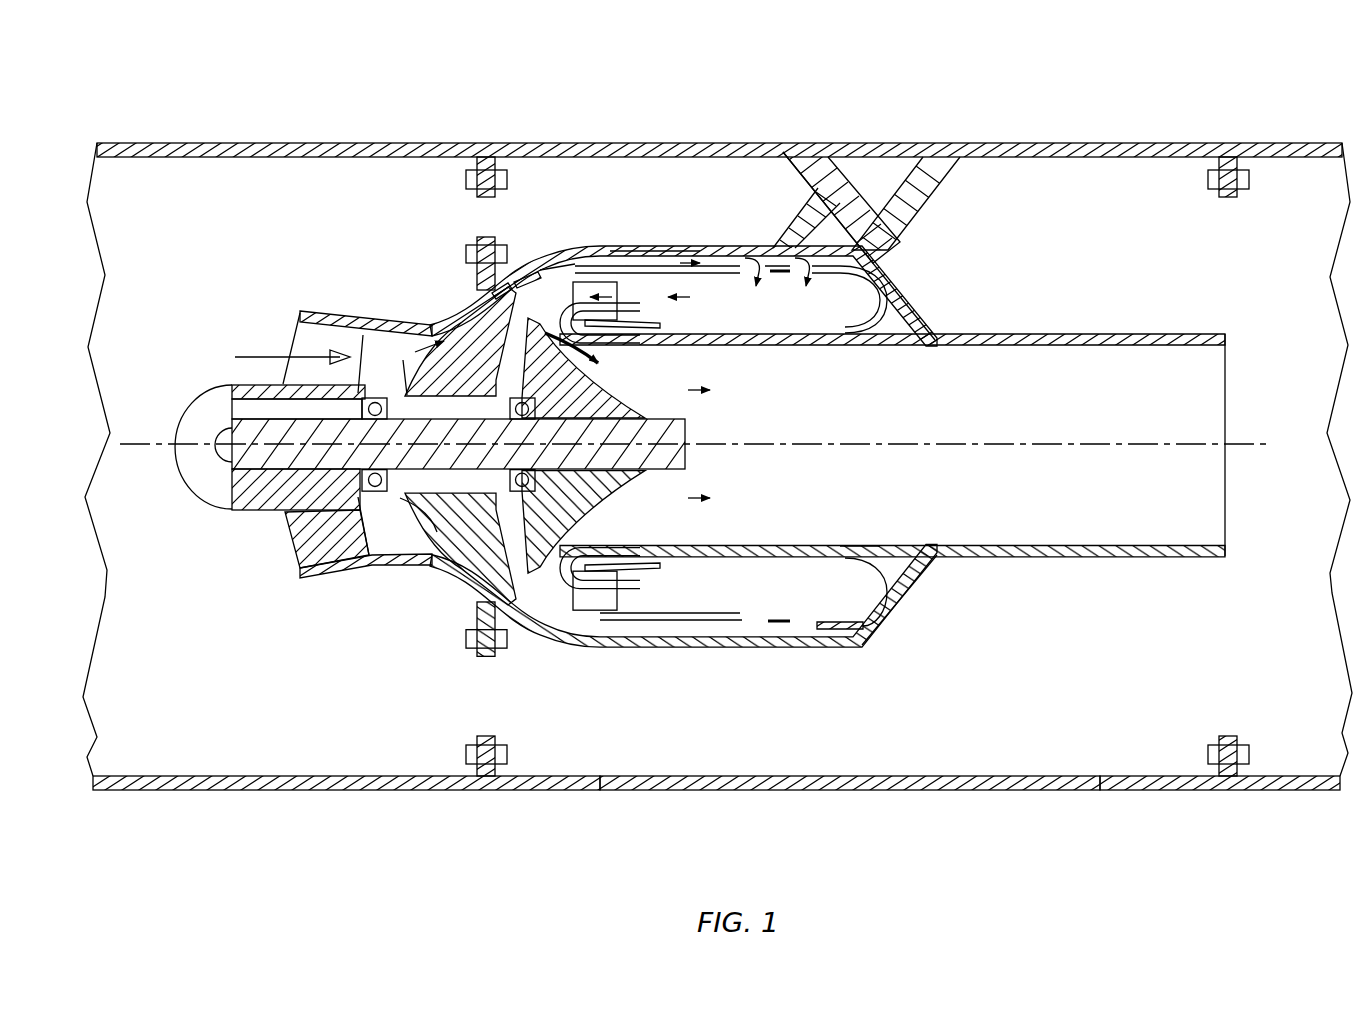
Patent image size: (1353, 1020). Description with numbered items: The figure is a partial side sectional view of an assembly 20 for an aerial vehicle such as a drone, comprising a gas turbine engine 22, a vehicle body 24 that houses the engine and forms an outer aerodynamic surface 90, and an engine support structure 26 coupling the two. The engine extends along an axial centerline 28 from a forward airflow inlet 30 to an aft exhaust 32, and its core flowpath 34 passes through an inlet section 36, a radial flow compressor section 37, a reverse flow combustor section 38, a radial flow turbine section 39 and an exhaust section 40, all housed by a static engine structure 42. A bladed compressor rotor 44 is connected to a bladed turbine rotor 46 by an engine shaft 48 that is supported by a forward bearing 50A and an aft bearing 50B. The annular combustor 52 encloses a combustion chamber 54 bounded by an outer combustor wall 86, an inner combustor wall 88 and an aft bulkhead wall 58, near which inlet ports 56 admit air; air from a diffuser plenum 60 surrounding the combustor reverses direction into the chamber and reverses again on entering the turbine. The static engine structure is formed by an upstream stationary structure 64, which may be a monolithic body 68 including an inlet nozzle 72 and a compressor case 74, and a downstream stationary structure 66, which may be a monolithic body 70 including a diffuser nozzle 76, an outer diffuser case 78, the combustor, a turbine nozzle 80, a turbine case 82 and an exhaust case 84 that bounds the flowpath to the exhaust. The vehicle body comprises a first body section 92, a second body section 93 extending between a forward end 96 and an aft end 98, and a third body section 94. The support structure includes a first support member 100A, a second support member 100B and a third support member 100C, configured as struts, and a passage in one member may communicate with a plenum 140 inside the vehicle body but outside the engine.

The assembly 20 is at (262, 86).
The gas turbine engine 22 is at (228, 250).
The vehicle body 24 is at (185, 120).
The engine support structure 26 is at (952, 215).
The axial centerline 28 is at (127, 458).
The airflow inlet 30 is at (295, 335).
The exhaust 32 is at (1228, 380).
The core flowpath 34 is at (385, 352).
The inlet section 36 is at (323, 300).
The compressor section 37 is at (425, 325).
The combustor section 38 is at (712, 247).
The turbine section 39 is at (548, 305).
The exhaust section 40 is at (1033, 334).
The static engine structure 42 is at (575, 649).
The compressor rotor 44 is at (430, 540).
The turbine rotor 46 is at (615, 487).
The engine shaft 48 is at (688, 455).
The forward bearing 50A is at (373, 530).
The aft bearing 50B is at (505, 482).
The combustor 52 is at (725, 631).
The combustion chamber 54 is at (828, 314).
The inlet ports 56 is at (800, 625).
The bulkhead wall 58 is at (905, 308).
The diffuser plenum 60 is at (660, 246).
The upstream stationary structure 64 is at (353, 597).
The monolithic body 68 is at (318, 598).
The downstream stationary structure 66 is at (897, 639).
The monolithic body 70 is at (858, 656).
The inlet nozzle 72 is at (288, 318).
The compressor case 74 is at (452, 320).
The diffuser nozzle 76 is at (545, 641).
The outer diffuser case 78 is at (680, 650).
The turbine nozzle 80 is at (636, 583).
The turbine case 82 is at (790, 546).
The exhaust case 84 is at (1072, 546).
The outer combustor wall 86 is at (820, 630).
The inner combustor wall 88 is at (858, 546).
The aerodynamic surface 90 is at (388, 143).
The first body section 92 is at (298, 796).
The second body section 93 is at (750, 796).
The third body section 94 is at (1288, 810).
The forward end 96 is at (483, 790).
The aft end 98 is at (1228, 790).
The first support member 100A is at (950, 175).
The second support member 100B is at (858, 163).
The third support member 100C is at (790, 232).
The plenum 140 is at (368, 200).